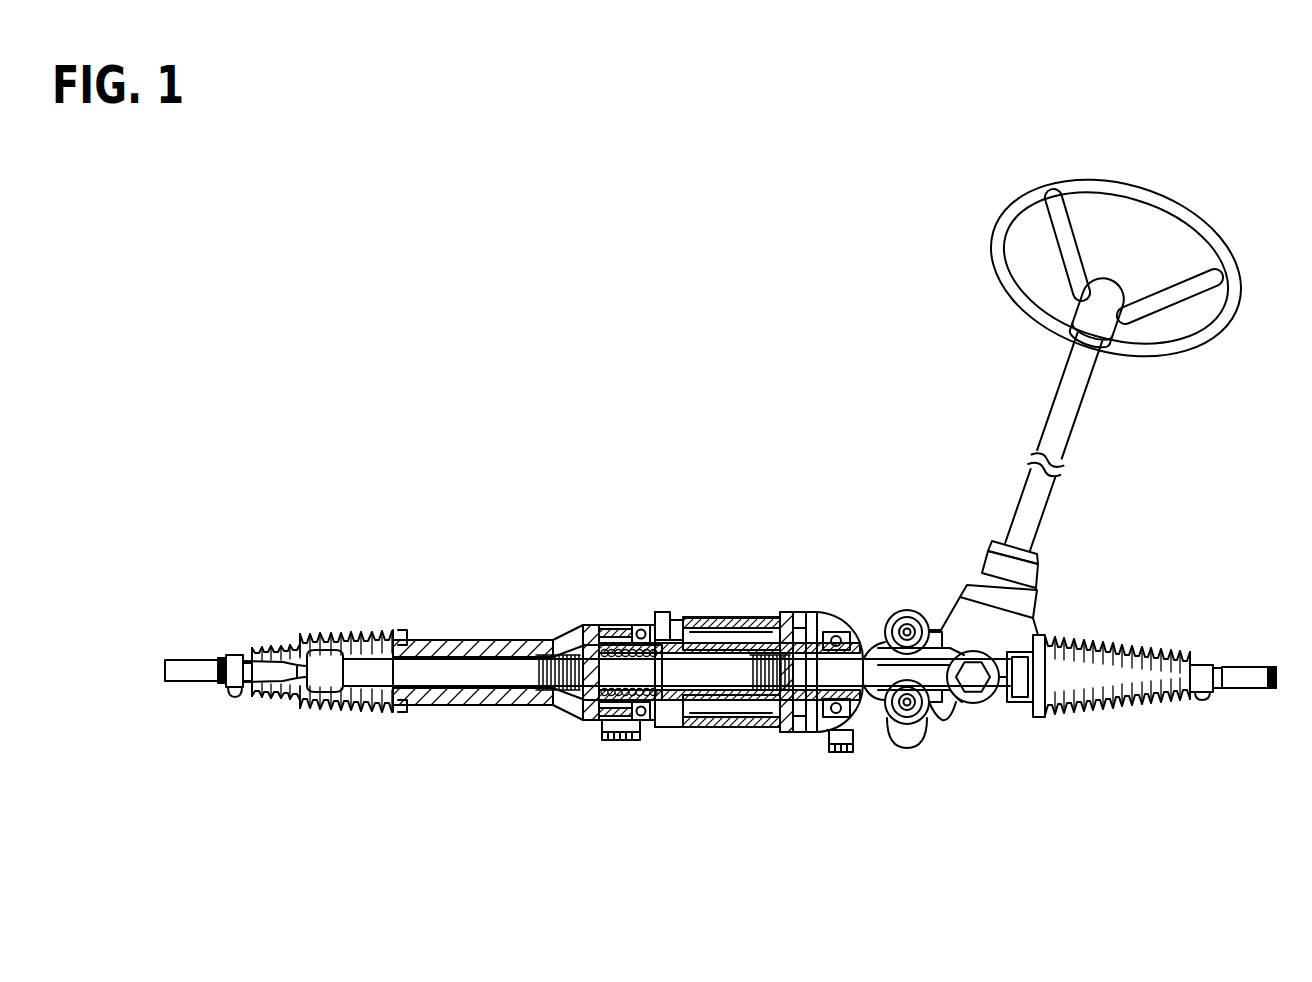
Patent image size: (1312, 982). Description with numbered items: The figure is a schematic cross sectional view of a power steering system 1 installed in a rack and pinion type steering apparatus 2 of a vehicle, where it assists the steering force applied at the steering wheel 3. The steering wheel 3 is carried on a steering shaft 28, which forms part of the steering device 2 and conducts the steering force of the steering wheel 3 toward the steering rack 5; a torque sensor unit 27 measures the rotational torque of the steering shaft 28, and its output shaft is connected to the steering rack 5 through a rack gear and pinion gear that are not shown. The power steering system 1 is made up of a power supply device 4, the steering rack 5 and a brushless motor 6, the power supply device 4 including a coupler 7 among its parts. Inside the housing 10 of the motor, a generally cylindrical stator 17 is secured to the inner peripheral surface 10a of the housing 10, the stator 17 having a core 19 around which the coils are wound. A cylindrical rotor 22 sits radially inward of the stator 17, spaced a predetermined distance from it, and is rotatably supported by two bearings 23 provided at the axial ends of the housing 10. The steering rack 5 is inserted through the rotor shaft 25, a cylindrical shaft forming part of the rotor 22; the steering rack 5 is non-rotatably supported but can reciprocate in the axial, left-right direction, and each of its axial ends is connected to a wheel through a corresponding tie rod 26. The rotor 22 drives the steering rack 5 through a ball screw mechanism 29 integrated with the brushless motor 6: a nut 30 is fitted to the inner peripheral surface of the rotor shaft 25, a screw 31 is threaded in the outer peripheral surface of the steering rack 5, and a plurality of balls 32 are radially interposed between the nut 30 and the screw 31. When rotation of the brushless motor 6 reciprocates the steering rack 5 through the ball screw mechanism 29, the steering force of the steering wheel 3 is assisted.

The power steering system 1 is at (497, 262).
The rack and pinion type steering apparatus 2 is at (781, 302).
The steering wheel 3 is at (1168, 213).
The power supply device 4 is at (637, 577).
The steering rack 5 is at (493, 670).
The brushless motor 6 is at (721, 545).
The coupler 7 is at (676, 622).
The housing 10 is at (698, 622).
The inner peripheral surface 10a is at (742, 630).
The stator 17 is at (722, 737).
The core 19 is at (763, 717).
The rotor 22 is at (805, 640).
The bearings 23 is at (845, 640).
The rotor shaft 25 is at (800, 720).
The tie rod 26 is at (188, 660).
The torque sensor unit 27 is at (978, 575).
The steering shaft 28 is at (1062, 441).
The ball screw mechanism 29 is at (594, 628).
The nut 30 is at (603, 702).
The screw 31 is at (545, 700).
The balls 32 is at (630, 672).